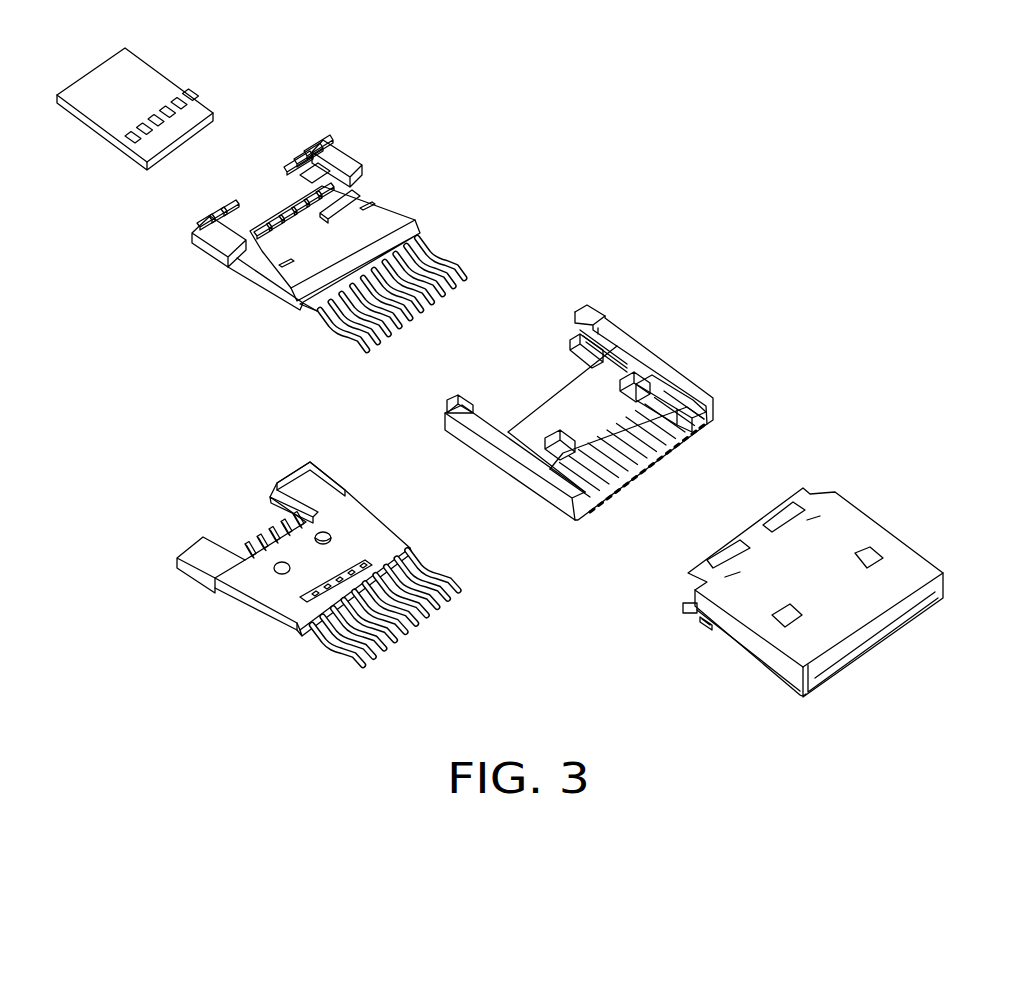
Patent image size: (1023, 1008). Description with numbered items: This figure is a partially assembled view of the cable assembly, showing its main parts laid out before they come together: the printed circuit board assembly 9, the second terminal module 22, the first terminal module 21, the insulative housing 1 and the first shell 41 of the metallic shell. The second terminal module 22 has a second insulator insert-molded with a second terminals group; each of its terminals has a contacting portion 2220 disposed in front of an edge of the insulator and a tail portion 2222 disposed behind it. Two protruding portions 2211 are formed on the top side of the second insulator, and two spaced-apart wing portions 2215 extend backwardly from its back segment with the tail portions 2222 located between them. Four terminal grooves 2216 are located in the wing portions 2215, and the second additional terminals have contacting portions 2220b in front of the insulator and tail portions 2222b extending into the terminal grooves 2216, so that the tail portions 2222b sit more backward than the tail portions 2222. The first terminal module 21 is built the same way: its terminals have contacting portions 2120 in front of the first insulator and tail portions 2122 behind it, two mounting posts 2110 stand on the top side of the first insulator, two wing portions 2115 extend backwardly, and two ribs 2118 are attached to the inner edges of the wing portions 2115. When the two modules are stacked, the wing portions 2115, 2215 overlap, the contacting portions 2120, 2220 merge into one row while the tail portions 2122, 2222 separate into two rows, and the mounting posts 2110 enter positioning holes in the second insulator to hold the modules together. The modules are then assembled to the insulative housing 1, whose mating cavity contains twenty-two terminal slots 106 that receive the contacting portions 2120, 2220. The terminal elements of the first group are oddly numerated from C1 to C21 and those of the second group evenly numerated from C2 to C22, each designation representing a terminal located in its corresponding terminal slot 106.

The printed circuit board assembly 9 is at (177, 70).
The insulative housing 1 is at (618, 410).
The terminal slots 106 is at (712, 420).
The second terminal module 22 is at (359, 210).
The tail portions of second terminals 2222 is at (290, 217).
The tail portions of second additional terminals 2222b is at (310, 152).
The terminal grooves 2216 is at (320, 147).
The wing portions 2215 is at (343, 150).
The protruding portions 2211 is at (363, 187).
The contacting portions of second additional terminals 2220b is at (478, 238).
The terminal element C2 is at (460, 262).
The contacting portions of second terminals 2220 is at (403, 283).
The terminal element C22 is at (350, 337).
The first terminal module 21 is at (315, 557).
The wing portions 2115 is at (308, 482).
The mounting posts 2110 is at (330, 533).
The ribs 2118 is at (273, 490).
The tail portions of first terminals 2122 is at (252, 550).
The terminal element C1 is at (427, 567).
The terminal element C21 is at (330, 637).
The contacting portions of first terminals 2120 is at (370, 615).
The first shell 41 is at (901, 519).